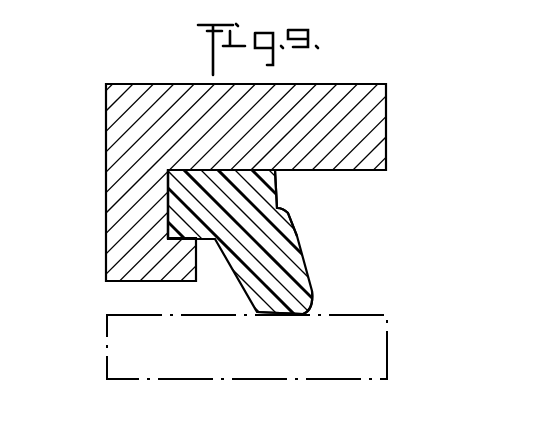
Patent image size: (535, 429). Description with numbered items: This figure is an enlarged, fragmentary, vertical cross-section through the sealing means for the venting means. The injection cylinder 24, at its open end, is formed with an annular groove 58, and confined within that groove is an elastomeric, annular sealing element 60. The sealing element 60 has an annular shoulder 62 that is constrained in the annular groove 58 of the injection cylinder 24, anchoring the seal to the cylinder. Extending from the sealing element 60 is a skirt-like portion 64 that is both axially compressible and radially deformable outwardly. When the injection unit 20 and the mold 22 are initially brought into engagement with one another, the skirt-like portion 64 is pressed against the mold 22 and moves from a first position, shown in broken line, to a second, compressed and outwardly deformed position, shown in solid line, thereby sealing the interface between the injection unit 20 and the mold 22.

The injection unit 20 is at (94, 113).
The mold 22 is at (132, 332).
The injection cylinder 24 is at (372, 122).
The annular groove 58 is at (176, 195).
The sealing element 60 is at (260, 191).
The annular shoulder 62 is at (175, 222).
The skirt-like portion 64 is at (306, 277).